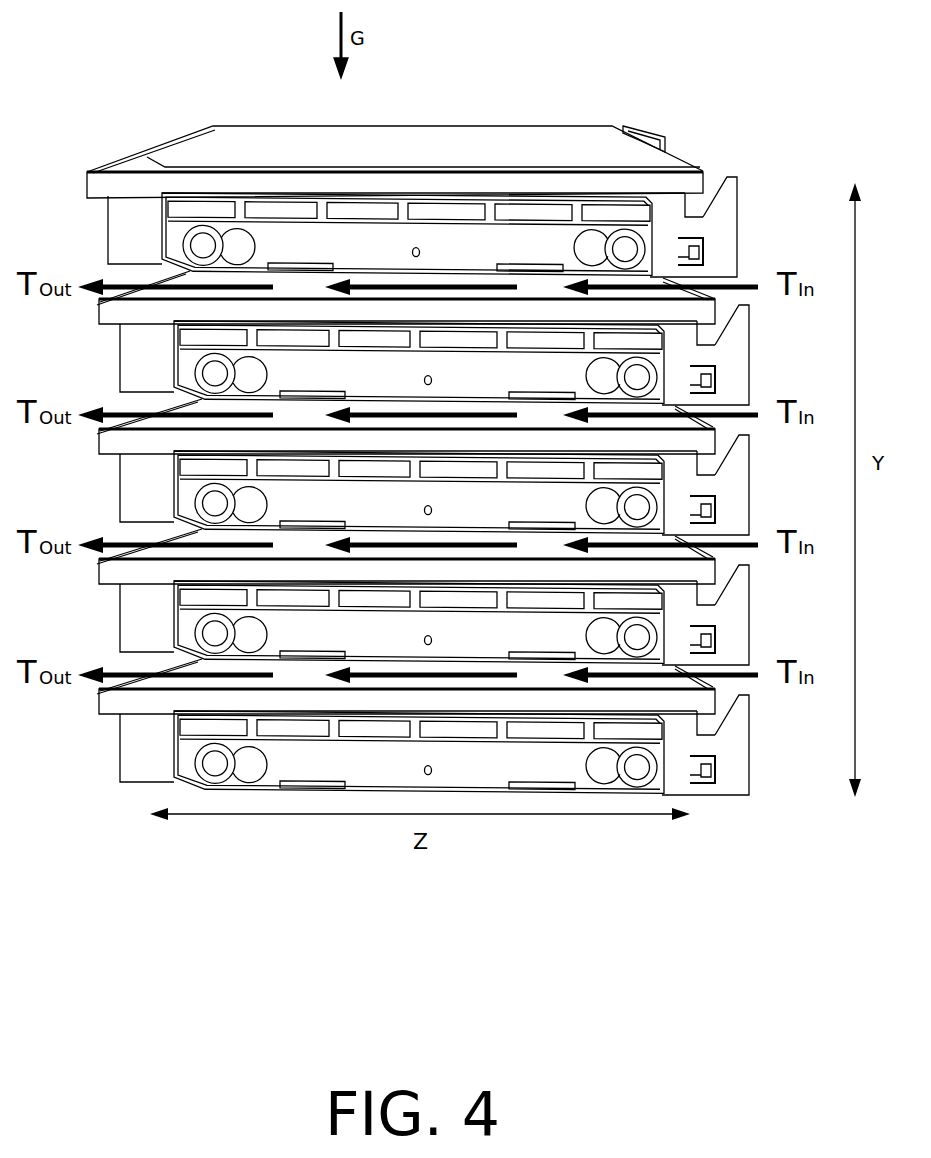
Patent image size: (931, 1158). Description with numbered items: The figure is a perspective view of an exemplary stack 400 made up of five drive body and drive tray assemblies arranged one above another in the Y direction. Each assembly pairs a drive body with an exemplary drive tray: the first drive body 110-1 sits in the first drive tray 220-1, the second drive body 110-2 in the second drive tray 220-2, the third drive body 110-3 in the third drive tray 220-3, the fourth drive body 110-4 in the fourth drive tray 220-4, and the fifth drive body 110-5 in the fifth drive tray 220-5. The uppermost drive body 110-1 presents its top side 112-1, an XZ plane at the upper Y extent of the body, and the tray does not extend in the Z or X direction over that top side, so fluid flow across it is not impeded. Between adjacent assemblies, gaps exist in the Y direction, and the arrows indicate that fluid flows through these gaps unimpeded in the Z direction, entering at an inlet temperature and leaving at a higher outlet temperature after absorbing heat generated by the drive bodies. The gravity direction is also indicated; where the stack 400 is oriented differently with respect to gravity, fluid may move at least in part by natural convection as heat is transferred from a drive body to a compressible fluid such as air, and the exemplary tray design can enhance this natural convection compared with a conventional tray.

The stack 400 is at (180, 68).
The top side 112-1 is at (410, 142).
The drive body 110-1 is at (118, 238).
The drive body 110-2 is at (128, 376).
The drive body 110-3 is at (130, 507).
The drive body 110-4 is at (130, 627).
The drive body 110-5 is at (128, 755).
The drive tray 220-1 is at (740, 224).
The drive tray 220-2 is at (750, 360).
The drive tray 220-3 is at (750, 490).
The drive tray 220-4 is at (750, 615).
The drive tray 220-5 is at (747, 743).